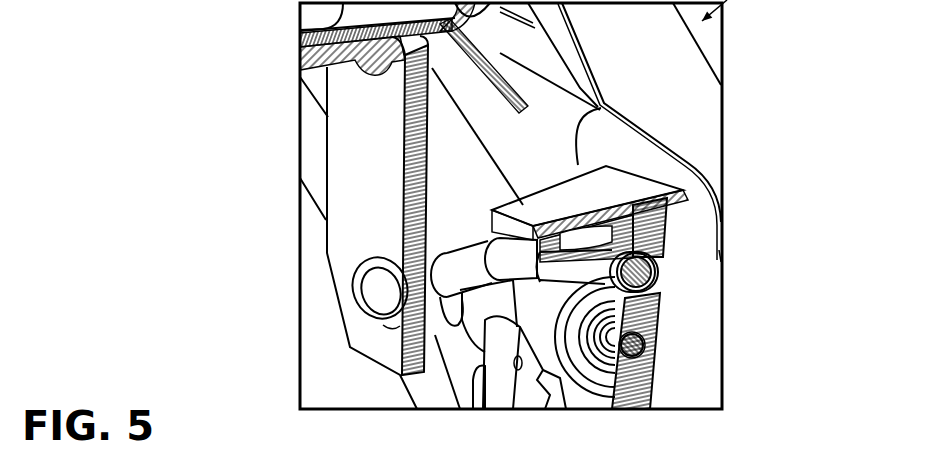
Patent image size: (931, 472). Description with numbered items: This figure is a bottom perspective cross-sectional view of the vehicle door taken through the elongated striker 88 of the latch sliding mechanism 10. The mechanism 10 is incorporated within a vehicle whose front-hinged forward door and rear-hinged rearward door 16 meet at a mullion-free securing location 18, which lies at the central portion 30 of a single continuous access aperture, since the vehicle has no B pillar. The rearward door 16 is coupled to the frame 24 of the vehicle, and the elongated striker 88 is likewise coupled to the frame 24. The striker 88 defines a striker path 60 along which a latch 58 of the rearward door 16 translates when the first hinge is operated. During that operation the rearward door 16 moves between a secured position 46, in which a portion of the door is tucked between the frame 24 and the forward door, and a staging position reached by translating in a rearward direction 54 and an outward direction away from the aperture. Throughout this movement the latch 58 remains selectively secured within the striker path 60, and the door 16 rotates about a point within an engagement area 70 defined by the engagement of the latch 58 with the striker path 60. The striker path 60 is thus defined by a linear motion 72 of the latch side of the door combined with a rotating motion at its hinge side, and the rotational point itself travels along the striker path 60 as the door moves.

The latch sliding mechanism 10 is at (750, 152).
The rearward door 16 is at (680, 58).
The mullion-free securing location 18 is at (493, 417).
The frame 24 is at (352, 168).
The central portion 30 is at (282, 282).
The secured position 46 is at (732, 213).
The rearward direction 54 is at (712, 348).
The latch 58 is at (648, 165).
The striker path 60 is at (668, 268).
The engagement area 70 is at (670, 302).
The linear motion 72 is at (717, 250).
The elongated striker 88 is at (567, 397).